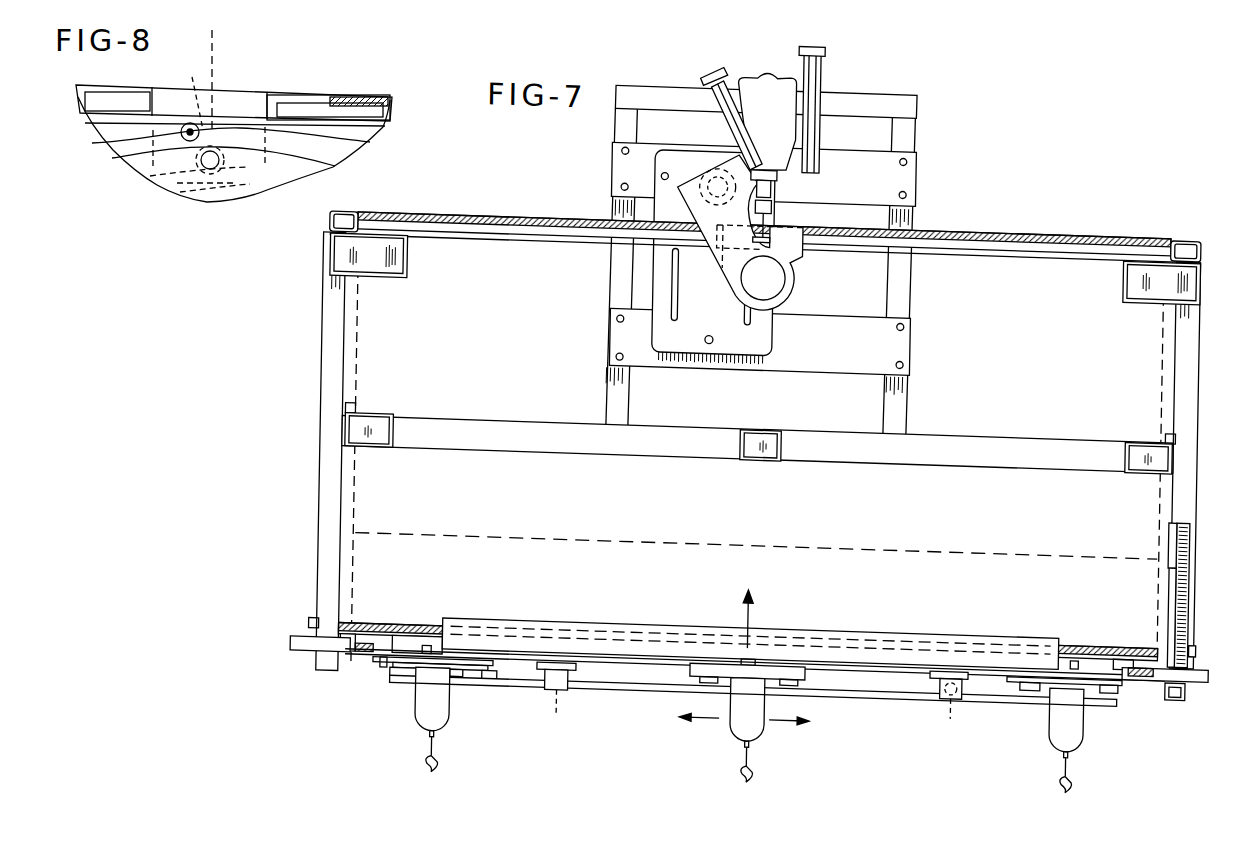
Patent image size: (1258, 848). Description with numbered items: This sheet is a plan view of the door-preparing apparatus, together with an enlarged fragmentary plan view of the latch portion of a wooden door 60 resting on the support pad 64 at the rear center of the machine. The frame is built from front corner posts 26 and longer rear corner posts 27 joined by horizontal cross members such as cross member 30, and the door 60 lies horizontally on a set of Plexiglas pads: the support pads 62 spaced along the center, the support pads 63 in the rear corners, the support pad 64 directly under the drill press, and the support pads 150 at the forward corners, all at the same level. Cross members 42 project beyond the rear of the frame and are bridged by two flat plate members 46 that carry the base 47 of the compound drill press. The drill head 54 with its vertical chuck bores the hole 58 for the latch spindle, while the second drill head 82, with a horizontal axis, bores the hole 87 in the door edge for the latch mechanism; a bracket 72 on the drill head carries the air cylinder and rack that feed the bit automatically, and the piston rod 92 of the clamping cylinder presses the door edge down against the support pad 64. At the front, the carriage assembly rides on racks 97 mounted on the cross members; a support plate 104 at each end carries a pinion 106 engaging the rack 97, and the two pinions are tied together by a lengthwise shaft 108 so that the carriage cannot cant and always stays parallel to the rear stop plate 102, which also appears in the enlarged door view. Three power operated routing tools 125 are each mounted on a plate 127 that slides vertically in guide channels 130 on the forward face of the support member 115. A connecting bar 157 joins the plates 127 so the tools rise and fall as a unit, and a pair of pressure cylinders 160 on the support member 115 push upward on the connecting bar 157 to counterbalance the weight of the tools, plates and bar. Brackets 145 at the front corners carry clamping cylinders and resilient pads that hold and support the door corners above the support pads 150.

In FIG. 7, the front corner post 26 is at (1187, 670).
In FIG. 7, the rear corner post 27 is at (345, 211).
In FIG. 7, the cross member 30 is at (320, 328).
In FIG. 7, the cross member 42 is at (915, 107).
In FIG. 7, the flat plate member 46 is at (912, 160).
In FIG. 7, the base 47 is at (653, 316).
In FIG. 7, the drill head 54 is at (725, 245).
In FIG. 8, the hole 58 is at (208, 168).
In FIG. 8, the wooden door 60 is at (135, 170).
In FIG. 7, the wooden door 60 is at (607, 533).
In FIG. 7, the support pad 62 is at (352, 425).
In FIG. 7, the support pad 63 is at (330, 258).
In FIG. 8, the support pad 64 is at (246, 100).
In FIG. 7, the support pad 64 is at (803, 250).
In FIG. 7, the bracket 72 is at (707, 72).
In FIG. 7, the drill head 82 is at (760, 62).
In FIG. 8, the hole 87 is at (195, 90).
In FIG. 8, the piston rod 92 is at (188, 124).
In FIG. 7, the rack 97 is at (1189, 524).
In FIG. 8, the rear stop plate 102 is at (310, 118).
In FIG. 7, the rear stop plate 102 is at (1033, 235).
In FIG. 7, the support plate 104 is at (1175, 570).
In FIG. 7, the pinion 106 is at (1196, 620).
In FIG. 7, the shaft 108 is at (1085, 620).
In FIG. 7, the support member 115 is at (640, 655).
In FIG. 7, the routing tool 125 is at (446, 695).
In FIG. 7, the plate 127 is at (795, 665).
In FIG. 7, the guide channel 130 is at (372, 660).
In FIG. 7, the bracket 145 is at (360, 652).
In FIG. 7, the support pad 150 is at (380, 621).
In FIG. 7, the connecting bar 157 is at (603, 680).
In FIG. 7, the pressure cylinder 160 is at (557, 708).